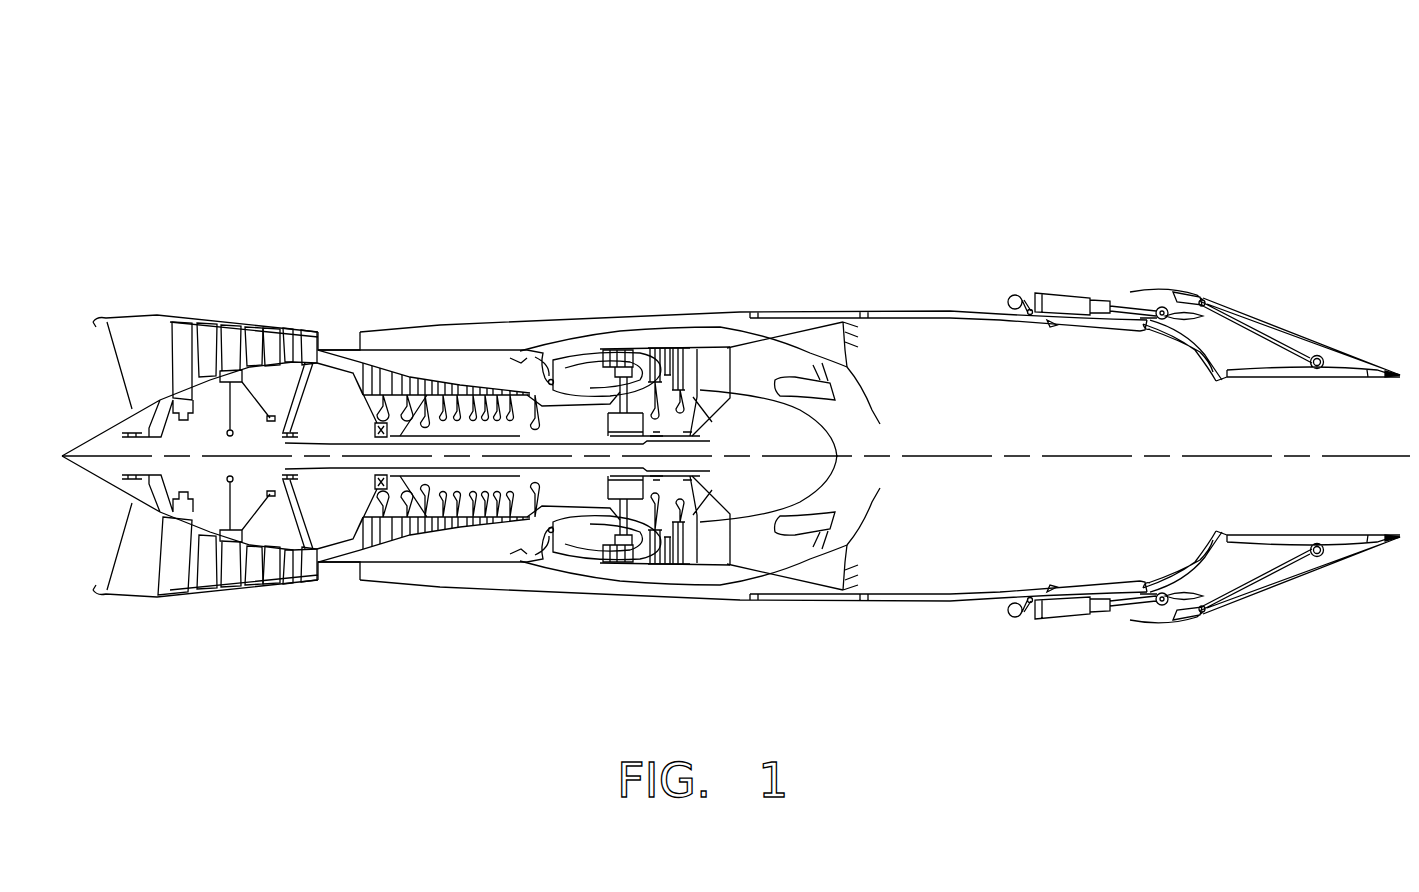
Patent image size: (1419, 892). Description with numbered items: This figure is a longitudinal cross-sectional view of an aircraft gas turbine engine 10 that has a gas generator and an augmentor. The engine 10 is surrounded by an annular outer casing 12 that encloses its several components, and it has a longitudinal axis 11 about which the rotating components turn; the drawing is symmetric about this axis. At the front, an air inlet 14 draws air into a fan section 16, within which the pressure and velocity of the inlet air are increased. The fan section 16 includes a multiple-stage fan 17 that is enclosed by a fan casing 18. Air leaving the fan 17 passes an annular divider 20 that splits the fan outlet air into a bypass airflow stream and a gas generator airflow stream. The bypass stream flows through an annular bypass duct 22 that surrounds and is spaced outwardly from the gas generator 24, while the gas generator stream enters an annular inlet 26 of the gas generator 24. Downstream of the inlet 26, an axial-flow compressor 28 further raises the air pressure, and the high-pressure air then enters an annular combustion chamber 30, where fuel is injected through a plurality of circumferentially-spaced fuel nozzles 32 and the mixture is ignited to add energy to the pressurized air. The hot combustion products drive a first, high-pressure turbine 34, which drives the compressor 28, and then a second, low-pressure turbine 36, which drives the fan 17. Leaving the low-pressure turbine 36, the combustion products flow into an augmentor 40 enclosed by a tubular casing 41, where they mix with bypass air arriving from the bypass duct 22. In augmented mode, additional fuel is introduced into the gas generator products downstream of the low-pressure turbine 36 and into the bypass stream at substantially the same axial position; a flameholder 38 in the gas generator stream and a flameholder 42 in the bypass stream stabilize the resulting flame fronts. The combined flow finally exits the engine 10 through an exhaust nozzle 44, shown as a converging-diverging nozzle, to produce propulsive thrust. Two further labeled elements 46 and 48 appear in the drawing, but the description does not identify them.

The aircraft gas turbine engine 10 is at (212, 112).
The longitudinal axis 11 is at (1263, 456).
The annular outer casing 12 is at (470, 320).
The air inlet 14 is at (80, 342).
The fan section 16 is at (193, 238).
The multiple-stage fan 17 is at (185, 318).
The fan casing 18 is at (272, 313).
The annular divider 20 is at (328, 340).
The annular bypass duct 22 is at (443, 330).
The gas generator 24 is at (525, 650).
The annular inlet 26 is at (350, 380).
The axial-flow compressor 28 is at (463, 397).
The annular combustion chamber 30 is at (578, 367).
The fuel nozzles 32 is at (540, 365).
The high-pressure turbine 34 is at (602, 413).
The low-pressure turbine 36 is at (655, 345).
The flameholder 38 is at (843, 392).
The augmentor 40 is at (1048, 382).
The tubular casing 41 is at (930, 312).
The flameholder 42 is at (860, 353).
The exhaust nozzle 44 is at (1213, 375).
The augmentor liner 46 is at (603, 312).
The core cowl 48 is at (420, 370).